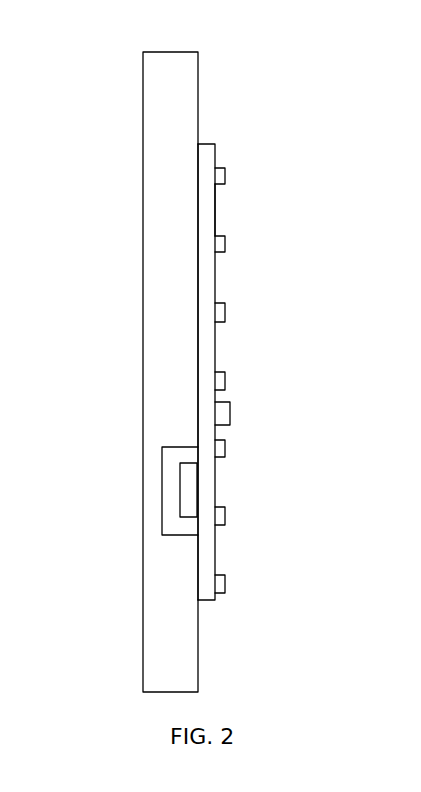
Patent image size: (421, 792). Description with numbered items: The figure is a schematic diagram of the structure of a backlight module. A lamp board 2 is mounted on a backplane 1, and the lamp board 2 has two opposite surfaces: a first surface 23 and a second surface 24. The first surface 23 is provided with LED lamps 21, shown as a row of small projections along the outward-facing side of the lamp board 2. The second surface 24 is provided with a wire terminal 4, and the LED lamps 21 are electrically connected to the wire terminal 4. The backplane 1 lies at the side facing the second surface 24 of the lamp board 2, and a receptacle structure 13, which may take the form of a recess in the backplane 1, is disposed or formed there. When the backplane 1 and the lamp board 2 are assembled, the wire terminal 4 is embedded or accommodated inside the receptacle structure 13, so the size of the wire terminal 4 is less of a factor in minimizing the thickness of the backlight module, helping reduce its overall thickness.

The backplane 1 is at (163, 68).
The lamp board 2 is at (214, 148).
The LED lamps 21 is at (224, 246).
The first surface 23 is at (217, 222).
The second surface 24 is at (196, 275).
The receptacle structure 13 is at (160, 455).
The wire terminal 4 is at (179, 491).